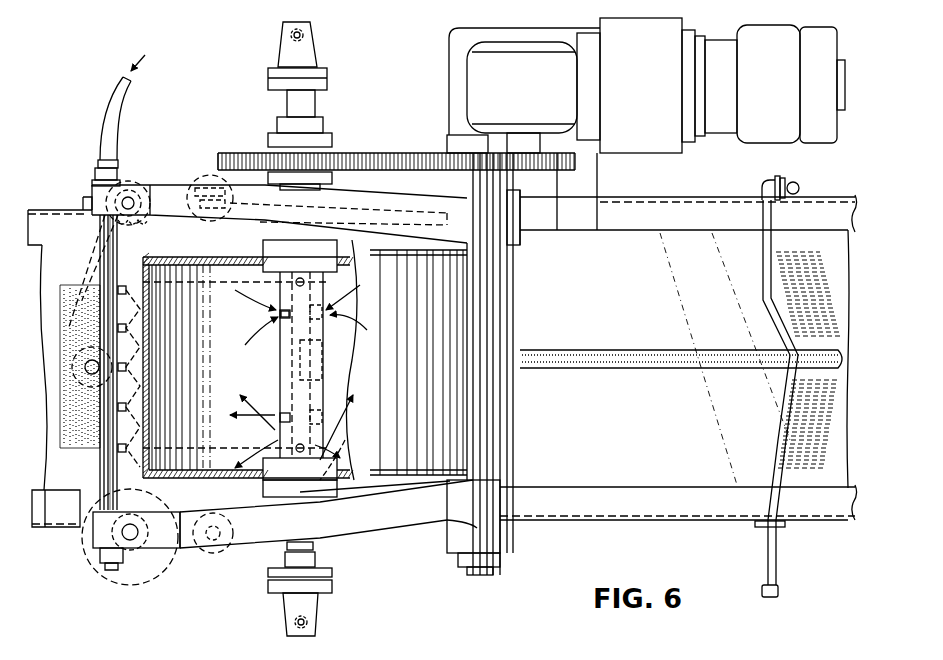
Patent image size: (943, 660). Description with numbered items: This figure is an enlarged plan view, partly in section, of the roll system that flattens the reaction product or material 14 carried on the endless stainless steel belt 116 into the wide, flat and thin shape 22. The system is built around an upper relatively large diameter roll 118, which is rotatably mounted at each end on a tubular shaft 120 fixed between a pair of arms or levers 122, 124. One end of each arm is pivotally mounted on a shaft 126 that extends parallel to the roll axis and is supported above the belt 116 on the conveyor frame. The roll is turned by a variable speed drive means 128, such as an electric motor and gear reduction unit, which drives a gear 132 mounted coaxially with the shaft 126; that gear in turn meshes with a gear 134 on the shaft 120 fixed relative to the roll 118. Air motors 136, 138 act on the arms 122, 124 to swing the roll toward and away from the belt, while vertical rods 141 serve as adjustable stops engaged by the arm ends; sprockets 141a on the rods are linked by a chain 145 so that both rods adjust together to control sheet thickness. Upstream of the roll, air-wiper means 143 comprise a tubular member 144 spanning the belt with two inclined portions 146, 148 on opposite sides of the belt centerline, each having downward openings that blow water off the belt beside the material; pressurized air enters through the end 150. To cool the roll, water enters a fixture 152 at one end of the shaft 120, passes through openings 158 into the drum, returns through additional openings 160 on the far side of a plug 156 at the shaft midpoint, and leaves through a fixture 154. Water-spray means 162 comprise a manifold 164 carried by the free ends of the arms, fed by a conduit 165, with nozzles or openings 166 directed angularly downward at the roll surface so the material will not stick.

The reaction product or material 14 is at (652, 353).
The wide, flat and thin shape 22 is at (67, 422).
The endless stainless steel belt 116 is at (585, 480).
The upper roll 118 is at (176, 218).
The tubular shaft 120 is at (295, 393).
The arm or lever 122 is at (399, 506).
The arm or lever 124 is at (432, 210).
The shaft 126 is at (487, 425).
The variable speed drive means 128 is at (697, 143).
The gear 132 is at (425, 156).
The gear 134 is at (348, 156).
The air motor 136 is at (215, 553).
The air motor 138 is at (200, 185).
The vertical rod 141 is at (143, 573).
The sprocket 141a is at (133, 555).
The air-wiper means 143 is at (778, 327).
The tubular member or manifold 144 is at (763, 488).
The chain 145 is at (88, 285).
The portion of tubular member 146 is at (785, 422).
The portion of tubular member 148 is at (781, 305).
The end of tubular member 150 is at (797, 182).
The fixture 152 is at (318, 45).
The fixture 154 is at (318, 623).
The plug 156 is at (318, 318).
The openings 158 is at (285, 318).
The additional openings 160 is at (333, 425).
The water-spray means 162 is at (97, 482).
The tubular member or manifold 164 is at (107, 437).
The conduit 165 is at (109, 112).
The nozzles or openings 166 is at (125, 410).